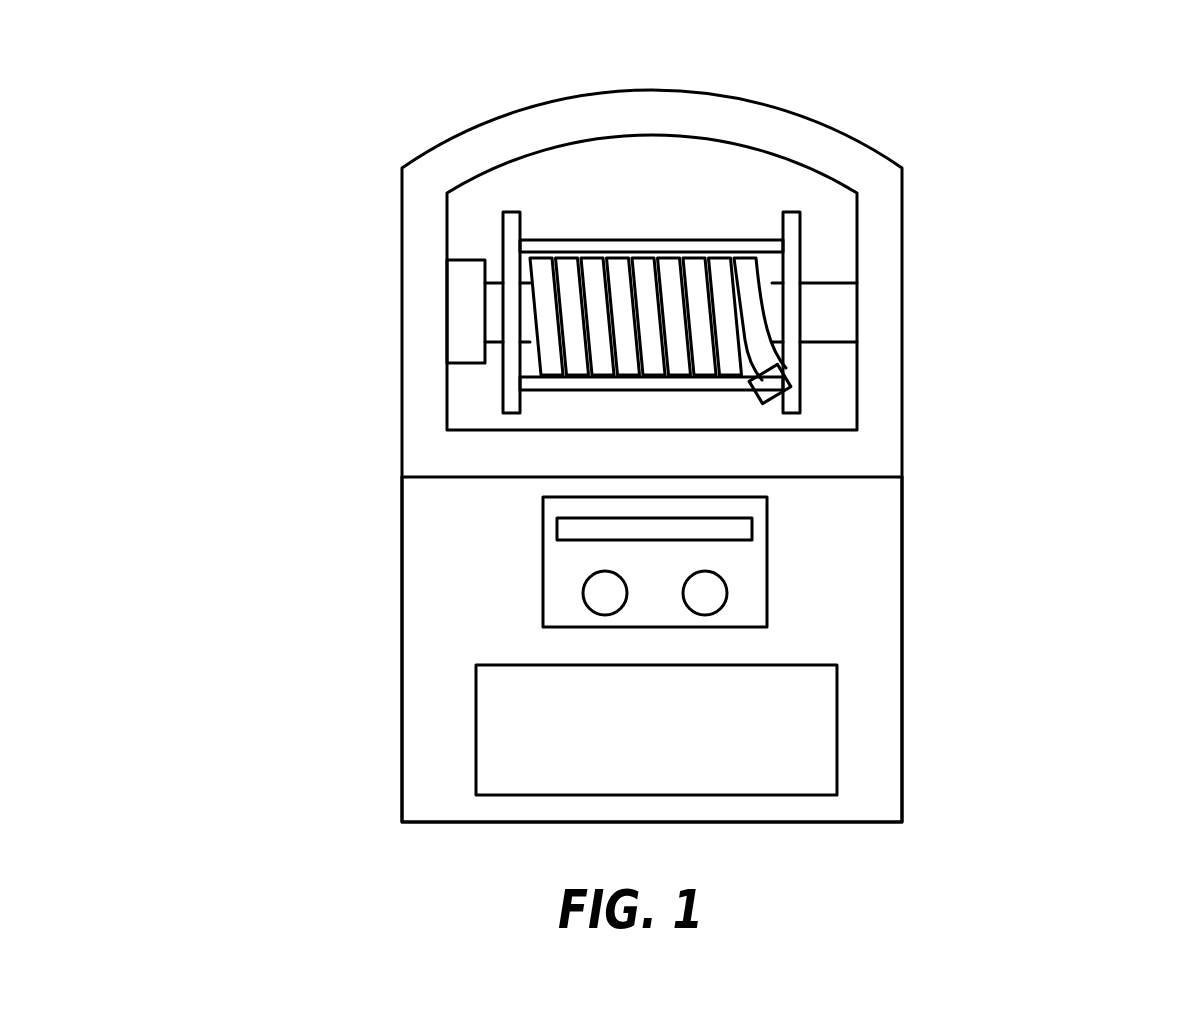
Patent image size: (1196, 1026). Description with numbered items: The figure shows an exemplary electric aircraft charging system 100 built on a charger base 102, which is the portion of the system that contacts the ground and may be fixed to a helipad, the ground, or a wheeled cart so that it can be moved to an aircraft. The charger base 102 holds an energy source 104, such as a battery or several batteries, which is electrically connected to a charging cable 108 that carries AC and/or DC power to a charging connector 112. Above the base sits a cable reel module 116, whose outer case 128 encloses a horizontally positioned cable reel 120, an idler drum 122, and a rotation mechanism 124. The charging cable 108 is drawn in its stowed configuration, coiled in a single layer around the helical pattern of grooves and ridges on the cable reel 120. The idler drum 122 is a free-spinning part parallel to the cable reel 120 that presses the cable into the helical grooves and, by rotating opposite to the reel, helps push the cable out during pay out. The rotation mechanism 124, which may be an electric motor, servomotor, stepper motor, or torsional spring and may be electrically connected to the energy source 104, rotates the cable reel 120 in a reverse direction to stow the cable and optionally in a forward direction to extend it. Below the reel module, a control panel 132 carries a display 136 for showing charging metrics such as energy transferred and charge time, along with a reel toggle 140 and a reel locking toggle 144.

The electric aircraft charging system 100 is at (609, 51).
The charger base 102 is at (453, 741).
The energy source 104 is at (837, 695).
The charging cable 108 is at (782, 321).
The charging connector 112 is at (797, 373).
The cable reel module 116 is at (913, 208).
The cable reel 120 is at (773, 283).
The idler drum 122 is at (592, 240).
The rotation mechanism 124 is at (473, 364).
The outer case 128 is at (402, 317).
The control panel 132 is at (527, 549).
The display 136 is at (752, 537).
The reel toggle 140 is at (583, 593).
The reel locking toggle 144 is at (727, 597).